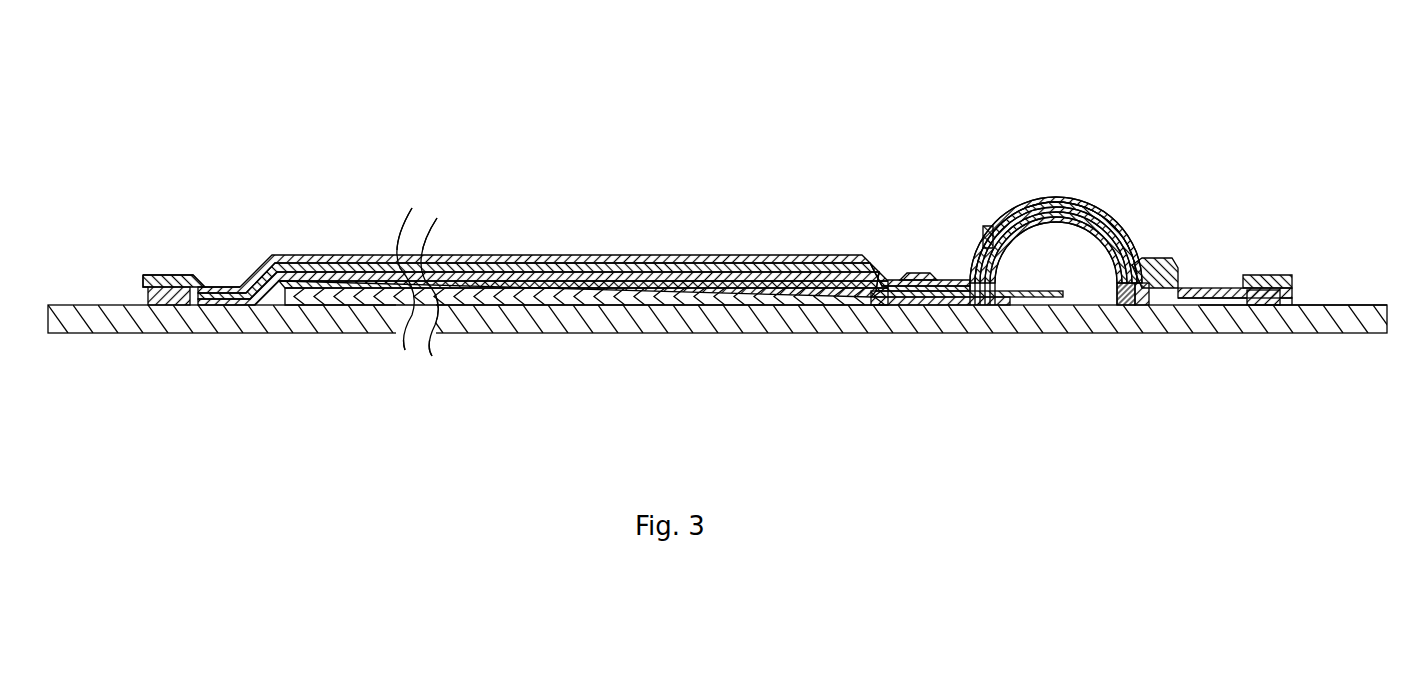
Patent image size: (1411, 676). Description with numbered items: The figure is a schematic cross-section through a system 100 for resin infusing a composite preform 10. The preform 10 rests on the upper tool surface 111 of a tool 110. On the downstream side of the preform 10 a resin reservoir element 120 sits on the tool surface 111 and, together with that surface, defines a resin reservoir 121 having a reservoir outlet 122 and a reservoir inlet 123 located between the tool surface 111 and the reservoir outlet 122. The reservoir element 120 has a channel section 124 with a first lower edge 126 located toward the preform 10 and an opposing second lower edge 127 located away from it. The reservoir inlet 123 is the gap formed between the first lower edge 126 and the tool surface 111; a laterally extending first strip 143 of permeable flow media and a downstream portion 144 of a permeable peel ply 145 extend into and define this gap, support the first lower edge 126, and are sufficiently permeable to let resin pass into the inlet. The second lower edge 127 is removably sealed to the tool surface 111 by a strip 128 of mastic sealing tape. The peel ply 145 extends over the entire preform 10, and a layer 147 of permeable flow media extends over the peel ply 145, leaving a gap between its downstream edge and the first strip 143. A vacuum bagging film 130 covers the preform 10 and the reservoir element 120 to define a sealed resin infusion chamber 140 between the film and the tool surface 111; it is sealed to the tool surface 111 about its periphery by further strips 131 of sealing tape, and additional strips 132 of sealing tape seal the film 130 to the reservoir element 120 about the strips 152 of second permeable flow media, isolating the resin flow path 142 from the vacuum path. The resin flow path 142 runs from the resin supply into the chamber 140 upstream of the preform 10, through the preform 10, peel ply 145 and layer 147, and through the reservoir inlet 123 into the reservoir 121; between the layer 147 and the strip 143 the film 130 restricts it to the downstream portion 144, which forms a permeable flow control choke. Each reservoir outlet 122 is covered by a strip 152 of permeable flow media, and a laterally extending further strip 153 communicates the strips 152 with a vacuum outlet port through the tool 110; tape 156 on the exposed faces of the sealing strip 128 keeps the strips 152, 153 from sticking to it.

The system 100 is at (192, 133).
The composite preform 10 is at (598, 296).
The tool 110 is at (478, 322).
The upper tool surface 111 is at (1352, 304).
The resin reservoir element 120 is at (1067, 292).
The resin reservoir 121 is at (1078, 290).
The reservoir outlet 122 is at (1050, 197).
The reservoir inlet 123 is at (1006, 281).
The channel section 124 is at (1106, 212).
The first lower edge 126 is at (990, 298).
The second lower edge 127 is at (1138, 304).
The strip of sealing tape 128 is at (1128, 304).
The vacuum bagging film 130 is at (497, 255).
The further strips of sealing tape 131 is at (168, 306).
The additional strips of sealing tape 132 is at (985, 227).
The resin infusion chamber 140 is at (584, 219).
The resin flow path 142 is at (214, 280).
The first strip of permeable flow media 143 is at (1030, 297).
The downstream portion of the peel ply 144 is at (895, 298).
The peel ply 145 is at (629, 255).
The layer of permeable flow media 147 is at (693, 255).
The strips of permeable flow media 152 is at (1028, 200).
The further strip of permeable flow media 153 is at (1246, 286).
The tape 156 is at (1150, 305).